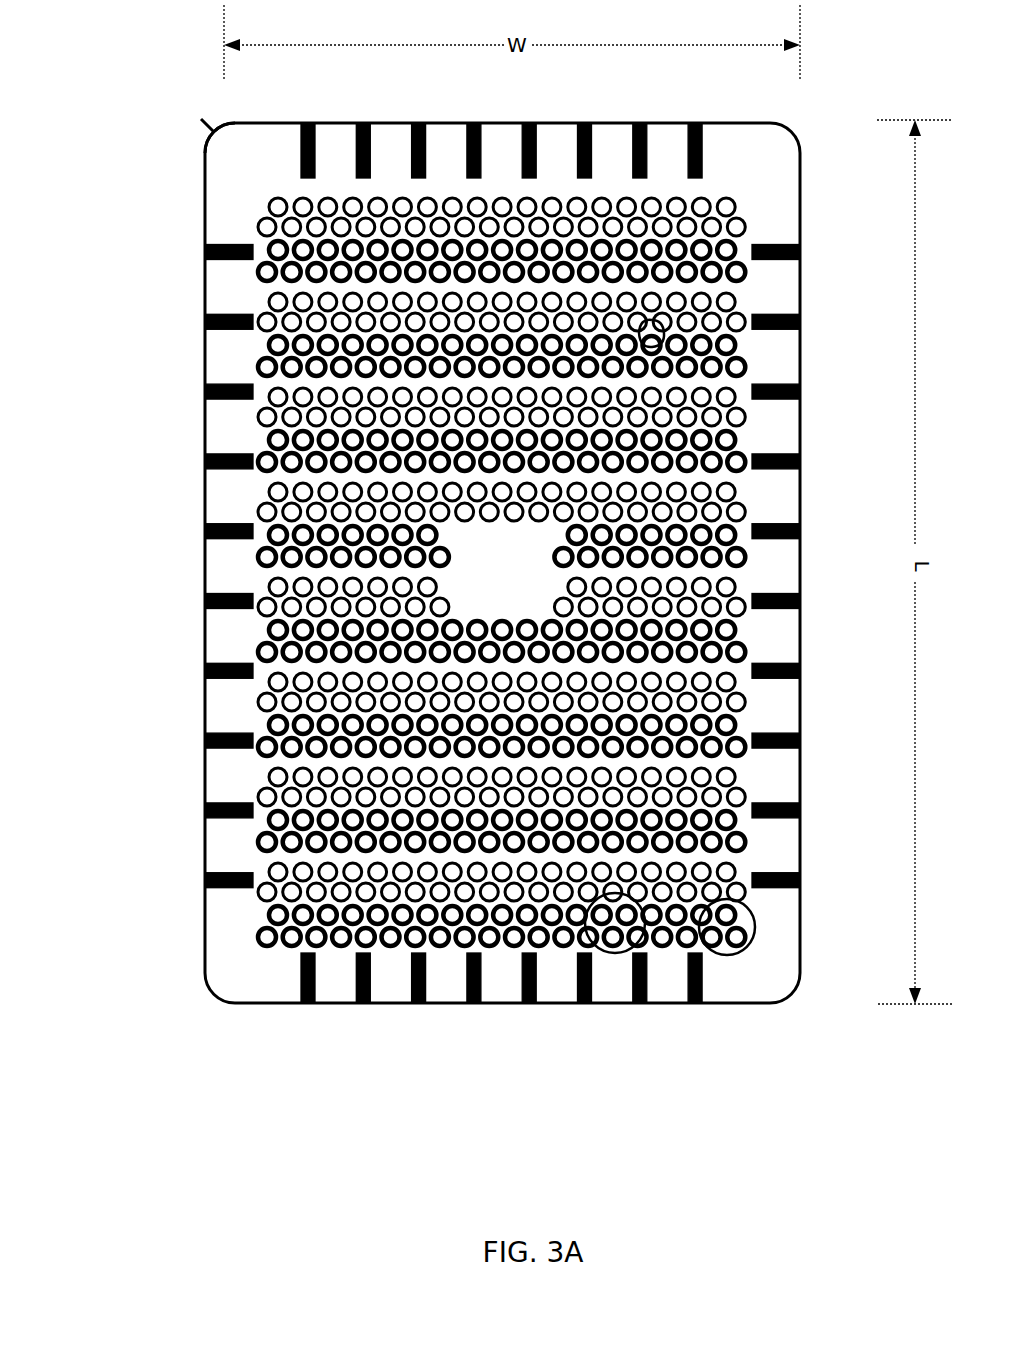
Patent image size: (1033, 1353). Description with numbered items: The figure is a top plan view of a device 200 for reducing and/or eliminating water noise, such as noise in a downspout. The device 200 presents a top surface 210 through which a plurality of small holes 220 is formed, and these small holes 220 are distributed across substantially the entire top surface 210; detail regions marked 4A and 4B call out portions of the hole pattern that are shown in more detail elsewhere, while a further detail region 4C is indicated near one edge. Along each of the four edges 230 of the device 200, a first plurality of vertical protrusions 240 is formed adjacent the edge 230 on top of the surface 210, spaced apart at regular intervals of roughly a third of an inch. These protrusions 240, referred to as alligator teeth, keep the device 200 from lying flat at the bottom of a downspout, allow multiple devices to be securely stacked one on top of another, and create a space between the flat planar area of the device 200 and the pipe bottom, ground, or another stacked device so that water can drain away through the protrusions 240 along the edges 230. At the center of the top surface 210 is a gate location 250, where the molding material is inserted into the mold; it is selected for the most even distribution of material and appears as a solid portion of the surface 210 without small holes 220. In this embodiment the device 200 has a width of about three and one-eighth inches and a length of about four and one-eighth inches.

The device 200 is at (98, 105).
The top surface 210 is at (225, 967).
The small holes 220 is at (245, 832).
The edges 230 is at (203, 120).
The vertical protrusions 240 is at (203, 745).
The gate location 250 is at (502, 572).
The detail region 4A is at (735, 953).
The detail region 4B is at (615, 953).
The detail region 4C is at (682, 334).